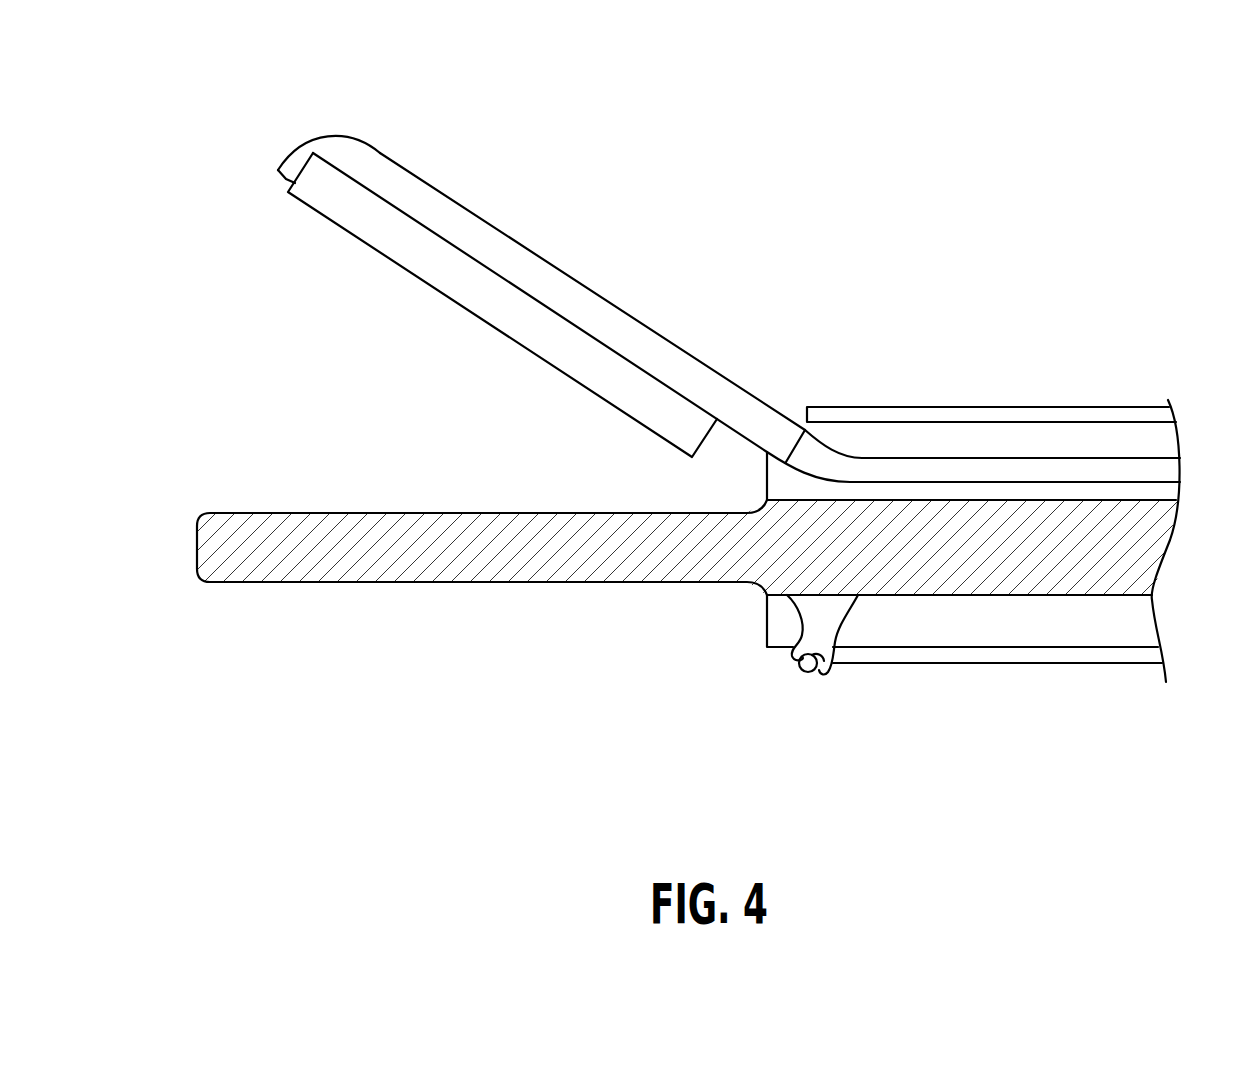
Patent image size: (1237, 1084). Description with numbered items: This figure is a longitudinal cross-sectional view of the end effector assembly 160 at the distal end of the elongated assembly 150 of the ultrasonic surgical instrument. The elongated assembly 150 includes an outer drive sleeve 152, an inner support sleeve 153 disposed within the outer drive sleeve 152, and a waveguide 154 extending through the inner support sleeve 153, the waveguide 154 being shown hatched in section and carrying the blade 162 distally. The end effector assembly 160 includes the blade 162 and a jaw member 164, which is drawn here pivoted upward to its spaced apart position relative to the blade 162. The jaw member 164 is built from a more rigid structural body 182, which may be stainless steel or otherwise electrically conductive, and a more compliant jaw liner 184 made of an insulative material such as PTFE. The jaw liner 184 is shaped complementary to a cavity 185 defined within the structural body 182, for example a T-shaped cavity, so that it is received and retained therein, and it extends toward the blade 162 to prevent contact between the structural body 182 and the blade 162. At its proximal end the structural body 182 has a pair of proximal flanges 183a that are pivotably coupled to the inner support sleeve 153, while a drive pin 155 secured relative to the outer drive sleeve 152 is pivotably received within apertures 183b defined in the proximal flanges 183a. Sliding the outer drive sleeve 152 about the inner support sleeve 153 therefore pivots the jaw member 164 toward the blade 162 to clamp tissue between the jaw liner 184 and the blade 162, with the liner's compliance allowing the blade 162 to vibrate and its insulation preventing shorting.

The elongated assembly 150 is at (950, 539).
The outer drive sleeve 152 is at (923, 407).
The inner support sleeve 153 is at (1010, 648).
The waveguide 154 is at (1112, 582).
The drive pin 155 is at (797, 668).
The end effector assembly 160 is at (684, 278).
The blade 162 is at (422, 563).
The jaw member 164 is at (284, 144).
The structural body 182 is at (657, 343).
The proximal flanges 183a is at (800, 614).
The apertures 183b is at (832, 670).
The jaw liner 184 is at (498, 330).
The cavity 185 is at (278, 171).